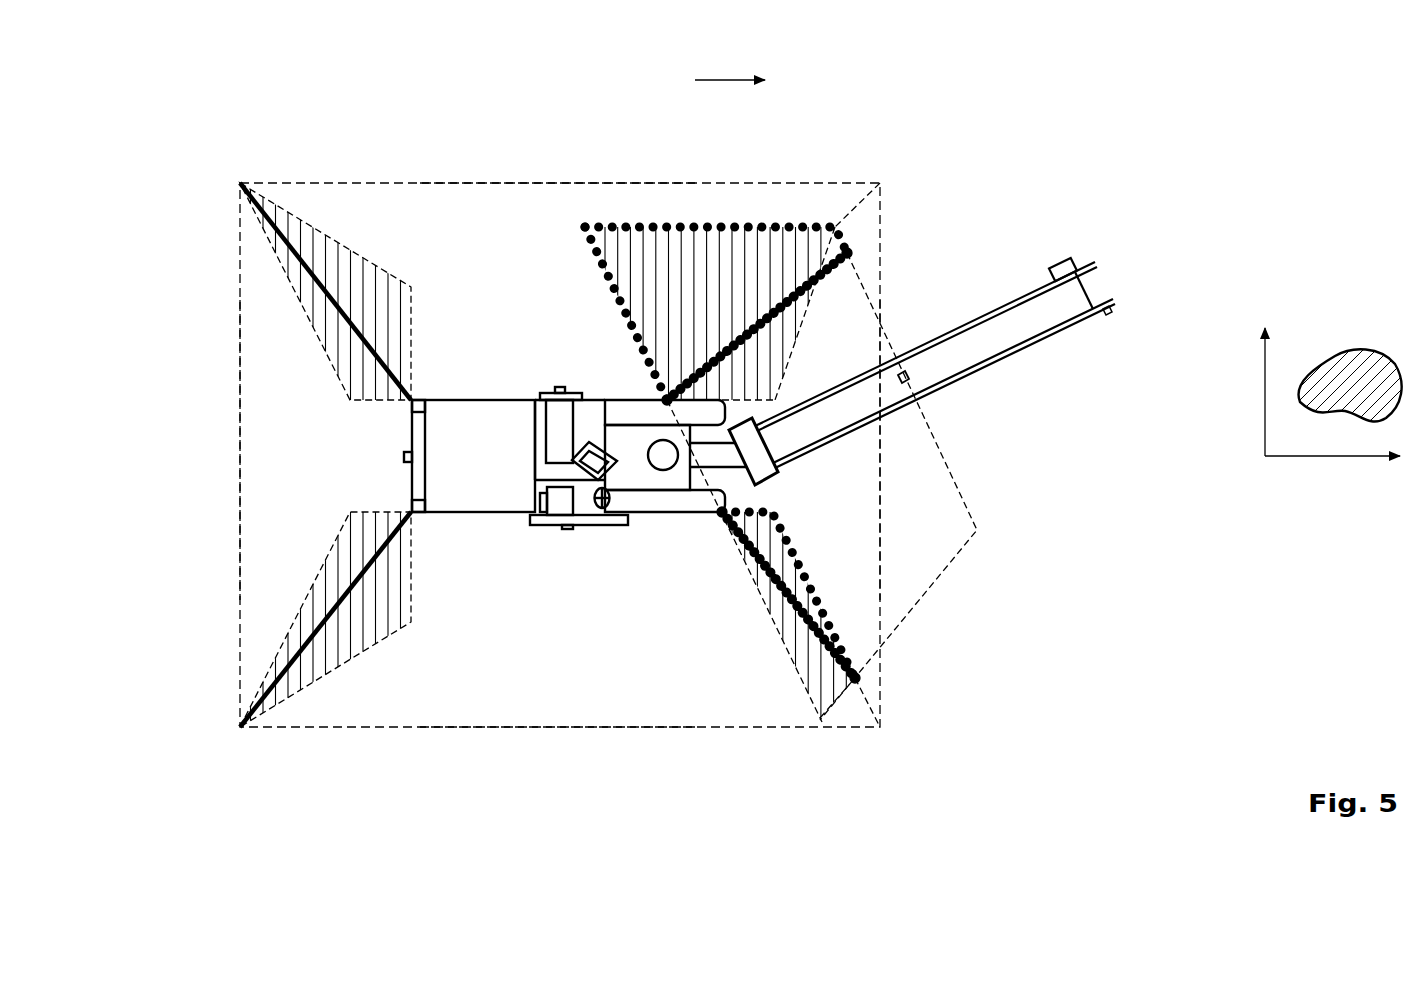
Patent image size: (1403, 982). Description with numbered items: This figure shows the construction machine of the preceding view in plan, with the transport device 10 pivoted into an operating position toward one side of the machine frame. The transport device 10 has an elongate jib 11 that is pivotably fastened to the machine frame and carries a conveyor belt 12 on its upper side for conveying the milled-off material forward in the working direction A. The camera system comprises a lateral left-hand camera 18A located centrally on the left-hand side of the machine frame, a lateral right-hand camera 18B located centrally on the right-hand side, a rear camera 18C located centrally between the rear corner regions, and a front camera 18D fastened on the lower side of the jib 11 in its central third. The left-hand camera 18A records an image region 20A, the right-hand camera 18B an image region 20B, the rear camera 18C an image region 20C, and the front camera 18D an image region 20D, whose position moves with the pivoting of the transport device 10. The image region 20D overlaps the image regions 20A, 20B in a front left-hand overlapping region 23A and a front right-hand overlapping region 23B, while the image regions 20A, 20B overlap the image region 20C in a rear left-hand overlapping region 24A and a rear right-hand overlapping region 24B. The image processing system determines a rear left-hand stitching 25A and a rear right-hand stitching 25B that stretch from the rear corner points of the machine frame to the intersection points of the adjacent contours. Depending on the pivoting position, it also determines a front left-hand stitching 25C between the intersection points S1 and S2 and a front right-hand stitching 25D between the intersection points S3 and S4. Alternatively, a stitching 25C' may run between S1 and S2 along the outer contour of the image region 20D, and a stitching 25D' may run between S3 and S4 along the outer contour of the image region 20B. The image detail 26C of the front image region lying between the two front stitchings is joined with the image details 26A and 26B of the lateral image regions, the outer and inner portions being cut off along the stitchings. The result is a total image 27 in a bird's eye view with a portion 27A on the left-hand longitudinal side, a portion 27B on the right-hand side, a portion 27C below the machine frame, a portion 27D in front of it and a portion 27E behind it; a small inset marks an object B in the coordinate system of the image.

The transport device 10 is at (1041, 247).
The jib 11 is at (1063, 330).
The conveyor belt 12 is at (1017, 318).
The lateral left-hand camera 18A is at (560, 387).
The lateral right-hand camera 18B is at (567, 532).
The rear camera 18C is at (404, 457).
The front camera 18D is at (907, 379).
The image region of the left-hand camera 20A is at (530, 205).
The image region of the right-hand camera 20B is at (555, 707).
The image region of the rear camera 20C is at (258, 450).
The image region of the front camera 20D is at (915, 463).
The front left-hand overlapping region 23A is at (766, 250).
The front right-hand overlapping region 23B is at (823, 667).
The rear left-hand overlapping region 24A is at (308, 242).
The rear right-hand overlapping region 24B is at (308, 660).
The rear left-hand stitching 25A is at (300, 285).
The rear right-hand stitching 25B is at (300, 628).
The front left-hand stitching 25C is at (808, 326).
The stitching along the outer contour of the front image region 25C' is at (770, 312).
The front right-hand stitching 25D is at (788, 655).
The stitching along the outer contour of the right-hand image region 25D' is at (846, 595).
The image detail of the left-hand image region 26A is at (700, 258).
The image detail of the right-hand image region 26B is at (746, 596).
The image detail of the front image region 26C is at (937, 516).
The total image 27 is at (452, 152).
The portion of the total image on the left-hand longitudinal side 27A is at (469, 333).
The portion of the total image on the right-hand longitudinal side 27B is at (484, 583).
The portion of the total image below the machine frame 27C is at (703, 443).
The portion of the total image in front of the machine frame 27D is at (883, 513).
The portion of the total image behind the machine frame 27E is at (289, 500).
The intersection point S1 is at (668, 396).
The intersection point S2 is at (850, 257).
The intersection point S3 is at (720, 518).
The intersection point S4 is at (860, 680).
The working direction A is at (718, 80).
The object B is at (1362, 365).